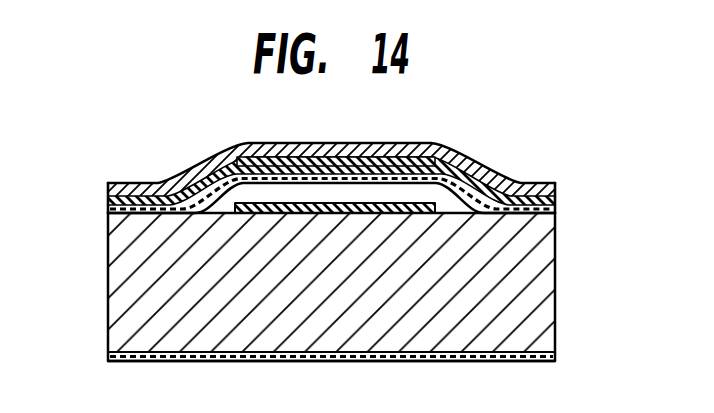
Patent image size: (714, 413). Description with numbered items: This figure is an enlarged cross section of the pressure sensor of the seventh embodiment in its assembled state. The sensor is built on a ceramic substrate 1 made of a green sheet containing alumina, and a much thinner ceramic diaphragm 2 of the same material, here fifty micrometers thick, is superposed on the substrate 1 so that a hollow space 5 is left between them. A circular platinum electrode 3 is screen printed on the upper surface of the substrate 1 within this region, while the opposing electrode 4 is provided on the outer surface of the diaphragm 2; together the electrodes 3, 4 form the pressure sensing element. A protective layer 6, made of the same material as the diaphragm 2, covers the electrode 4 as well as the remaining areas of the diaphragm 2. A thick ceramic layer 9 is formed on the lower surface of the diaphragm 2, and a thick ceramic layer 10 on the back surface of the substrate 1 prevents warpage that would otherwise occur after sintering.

The substrate 1 is at (117, 282).
The diaphragm 2 is at (108, 202).
The electrode 3 is at (232, 205).
The electrode 4 is at (375, 153).
The hollow space 5 is at (483, 180).
The protective layer 6 is at (108, 188).
The thick ceramic layer 9 is at (457, 202).
The thick ceramic layer 10 is at (533, 358).